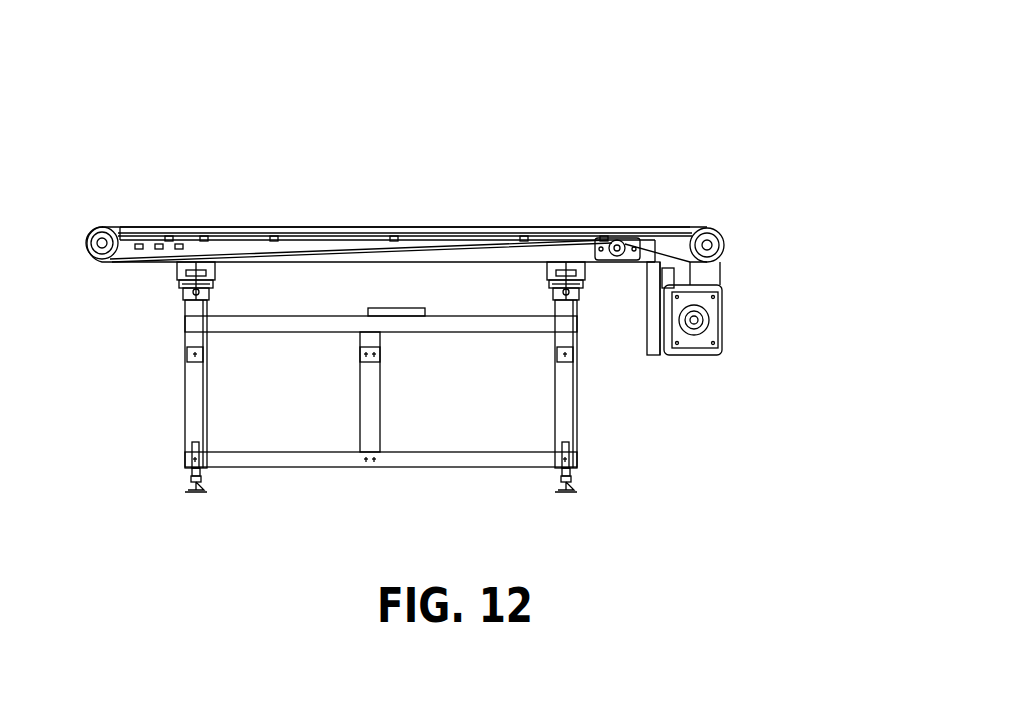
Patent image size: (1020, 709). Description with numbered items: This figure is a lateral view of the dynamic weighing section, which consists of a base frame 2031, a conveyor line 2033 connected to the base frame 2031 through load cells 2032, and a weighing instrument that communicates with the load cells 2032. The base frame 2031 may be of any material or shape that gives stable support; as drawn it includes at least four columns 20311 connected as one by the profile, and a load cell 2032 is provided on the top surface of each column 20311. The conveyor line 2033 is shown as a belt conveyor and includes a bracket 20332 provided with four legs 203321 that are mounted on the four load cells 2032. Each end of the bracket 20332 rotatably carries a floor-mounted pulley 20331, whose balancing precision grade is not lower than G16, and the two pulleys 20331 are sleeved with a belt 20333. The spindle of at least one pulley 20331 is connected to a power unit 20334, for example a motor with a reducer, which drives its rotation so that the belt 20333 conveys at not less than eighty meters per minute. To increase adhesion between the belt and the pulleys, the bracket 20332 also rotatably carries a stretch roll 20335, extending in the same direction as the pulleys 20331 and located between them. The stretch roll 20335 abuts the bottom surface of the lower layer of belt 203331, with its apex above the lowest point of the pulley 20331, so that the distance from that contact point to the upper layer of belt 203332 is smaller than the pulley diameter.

The base frame 2031 is at (582, 466).
The column 20311 is at (195, 415).
The load cell 2032 is at (181, 304).
The conveyor line 2033 is at (464, 211).
The pulley 20331 is at (100, 228).
The bracket 20332 is at (388, 180).
The leg 203321 is at (237, 245).
The belt 20333 is at (404, 164).
The lower layer of belt 203331 is at (307, 238).
The upper layer of belt 203332 is at (430, 226).
The power unit 20334 is at (718, 273).
The stretch roll 20335 is at (616, 232).